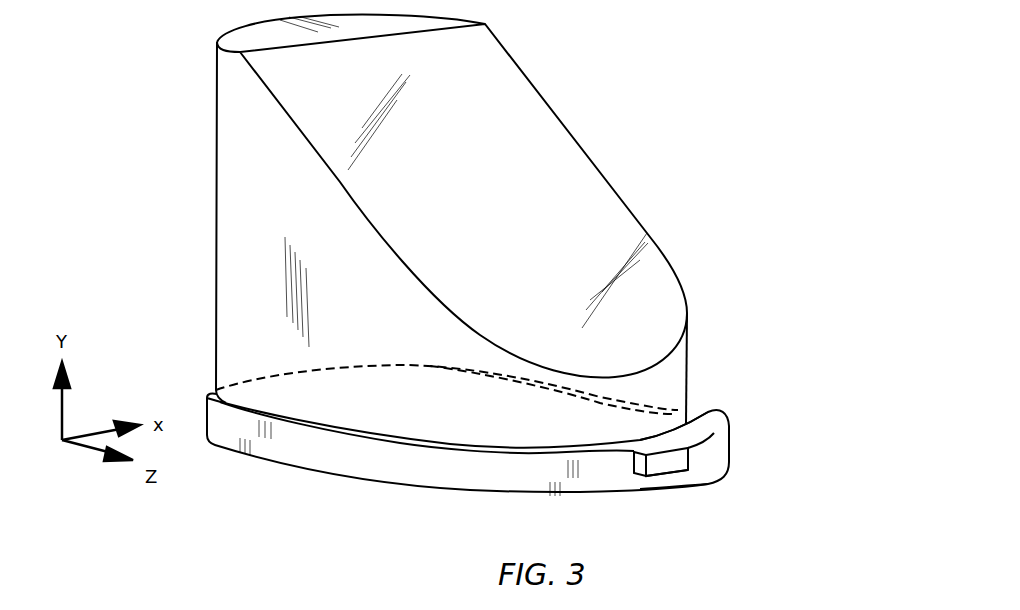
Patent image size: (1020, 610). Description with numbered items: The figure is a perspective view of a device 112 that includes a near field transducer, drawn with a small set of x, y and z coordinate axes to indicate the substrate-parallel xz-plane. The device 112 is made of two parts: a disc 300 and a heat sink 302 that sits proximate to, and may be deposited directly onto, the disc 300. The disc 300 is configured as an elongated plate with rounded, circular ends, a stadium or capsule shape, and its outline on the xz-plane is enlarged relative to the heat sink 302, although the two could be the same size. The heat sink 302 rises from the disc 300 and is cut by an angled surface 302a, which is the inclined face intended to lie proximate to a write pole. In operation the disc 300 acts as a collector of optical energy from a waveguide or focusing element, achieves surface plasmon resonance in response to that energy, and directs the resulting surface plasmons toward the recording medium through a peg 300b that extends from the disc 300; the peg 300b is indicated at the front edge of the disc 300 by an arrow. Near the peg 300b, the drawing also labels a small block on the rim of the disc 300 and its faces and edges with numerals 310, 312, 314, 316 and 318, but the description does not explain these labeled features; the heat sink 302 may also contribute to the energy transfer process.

The device 112 is at (772, 205).
The disc 300 is at (363, 477).
The peg 300b is at (672, 485).
The heat sink 302 is at (594, 162).
The angled surface 302a is at (527, 105).
The connector block 310 is at (657, 467).
The recess in base rim 312 is at (662, 445).
The side face of connector 314 is at (636, 466).
The front face of connector 316 is at (692, 458).
The bottom edge of connector 318 is at (690, 472).